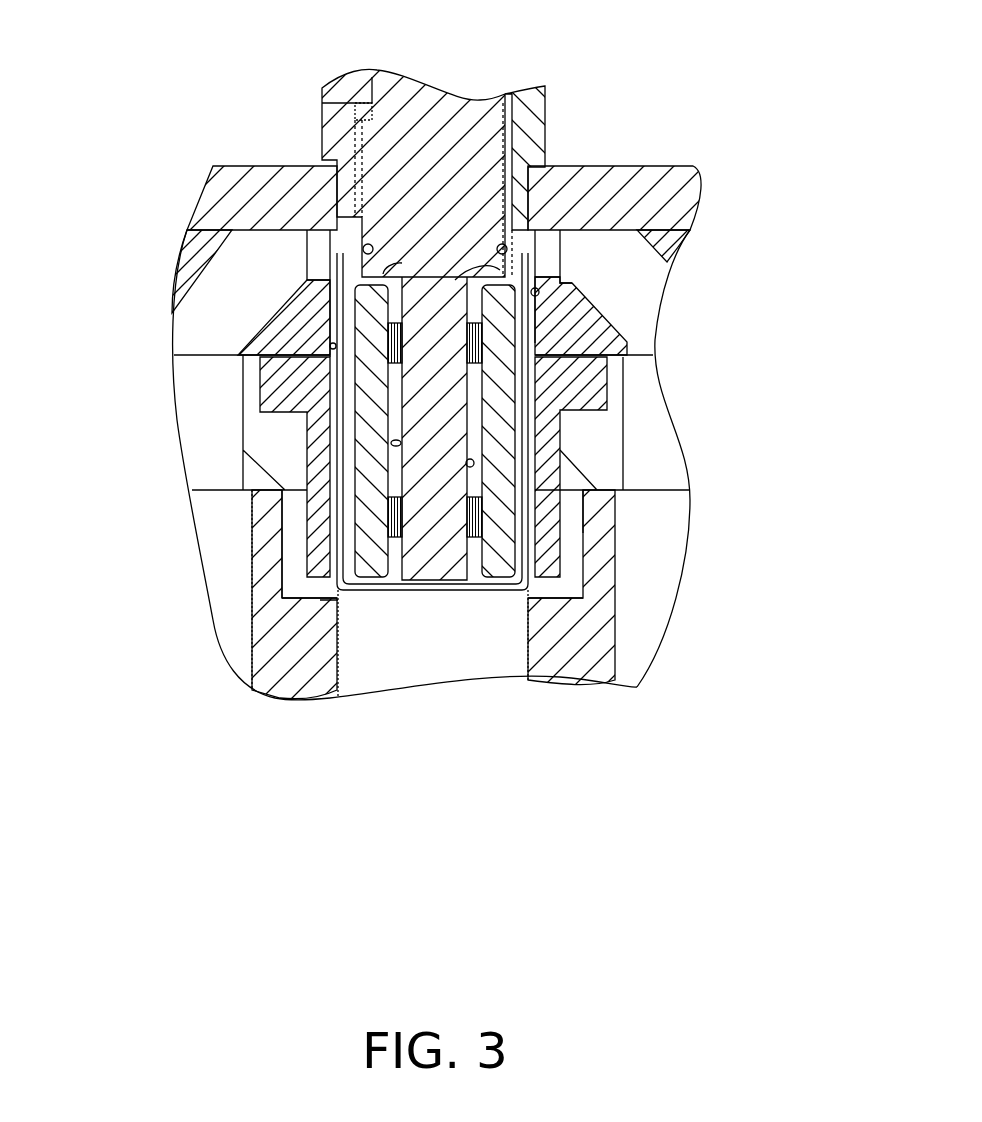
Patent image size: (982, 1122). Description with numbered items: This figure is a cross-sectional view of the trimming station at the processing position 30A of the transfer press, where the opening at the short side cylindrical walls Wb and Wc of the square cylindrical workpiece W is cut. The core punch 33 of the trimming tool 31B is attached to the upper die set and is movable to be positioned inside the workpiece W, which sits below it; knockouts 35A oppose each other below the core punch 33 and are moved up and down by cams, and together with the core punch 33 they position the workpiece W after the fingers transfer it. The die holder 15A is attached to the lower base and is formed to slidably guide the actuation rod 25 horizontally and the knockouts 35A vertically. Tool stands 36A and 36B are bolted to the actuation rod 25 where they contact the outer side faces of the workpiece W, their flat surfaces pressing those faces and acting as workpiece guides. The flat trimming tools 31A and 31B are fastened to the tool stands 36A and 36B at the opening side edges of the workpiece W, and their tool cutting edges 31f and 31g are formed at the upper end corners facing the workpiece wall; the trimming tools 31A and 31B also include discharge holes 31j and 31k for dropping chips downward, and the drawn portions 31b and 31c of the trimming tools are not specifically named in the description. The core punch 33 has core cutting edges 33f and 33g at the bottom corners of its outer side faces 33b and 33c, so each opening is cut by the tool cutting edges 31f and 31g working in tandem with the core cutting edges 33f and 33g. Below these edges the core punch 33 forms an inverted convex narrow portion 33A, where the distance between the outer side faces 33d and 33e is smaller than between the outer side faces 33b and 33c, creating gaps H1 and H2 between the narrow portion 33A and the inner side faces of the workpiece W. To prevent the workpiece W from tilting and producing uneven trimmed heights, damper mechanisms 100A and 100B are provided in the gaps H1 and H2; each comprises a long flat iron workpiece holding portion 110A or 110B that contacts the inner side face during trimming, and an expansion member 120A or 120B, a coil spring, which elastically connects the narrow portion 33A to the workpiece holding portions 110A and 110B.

The processing position 30A is at (287, 95).
The core punch 33 is at (414, 72).
The narrow portion 33A is at (447, 550).
The outer side face 33b is at (373, 246).
The outer side face 33c is at (498, 246).
The outer side face 33d is at (400, 443).
The outer side face 33e is at (468, 463).
The core cutting edge 33f is at (405, 257).
The core cutting edge 33g is at (456, 285).
The gap H1 is at (352, 275).
The gap H2 is at (515, 275).
The trimming tool 31A is at (240, 347).
The trimming tool 31B is at (630, 320).
The housing inclined surface 31b is at (330, 305).
The housing inclined surface 31c is at (540, 292).
The tool cutting edge 31f is at (330, 265).
The tool cutting edge 31g is at (540, 258).
The discharge hole 31j is at (210, 243).
The discharge hole 31k is at (626, 237).
The short side cylindrical wall Wb is at (331, 345).
The short side cylindrical wall Wc is at (592, 302).
The workpiece W is at (360, 590).
The tool stand 36A is at (268, 393).
The tool stand 36B is at (612, 402).
The actuation rod 25 is at (256, 482).
The die holder 15A is at (263, 548).
The damper mechanism 100A is at (343, 499).
The damper mechanism 100B is at (531, 494).
The workpiece holding portion 110A is at (283, 648).
The workpiece holding portion 110B is at (585, 538).
The expansion member 120A is at (400, 342).
The expansion member 120B is at (484, 345).
The knockout 35A is at (500, 617).